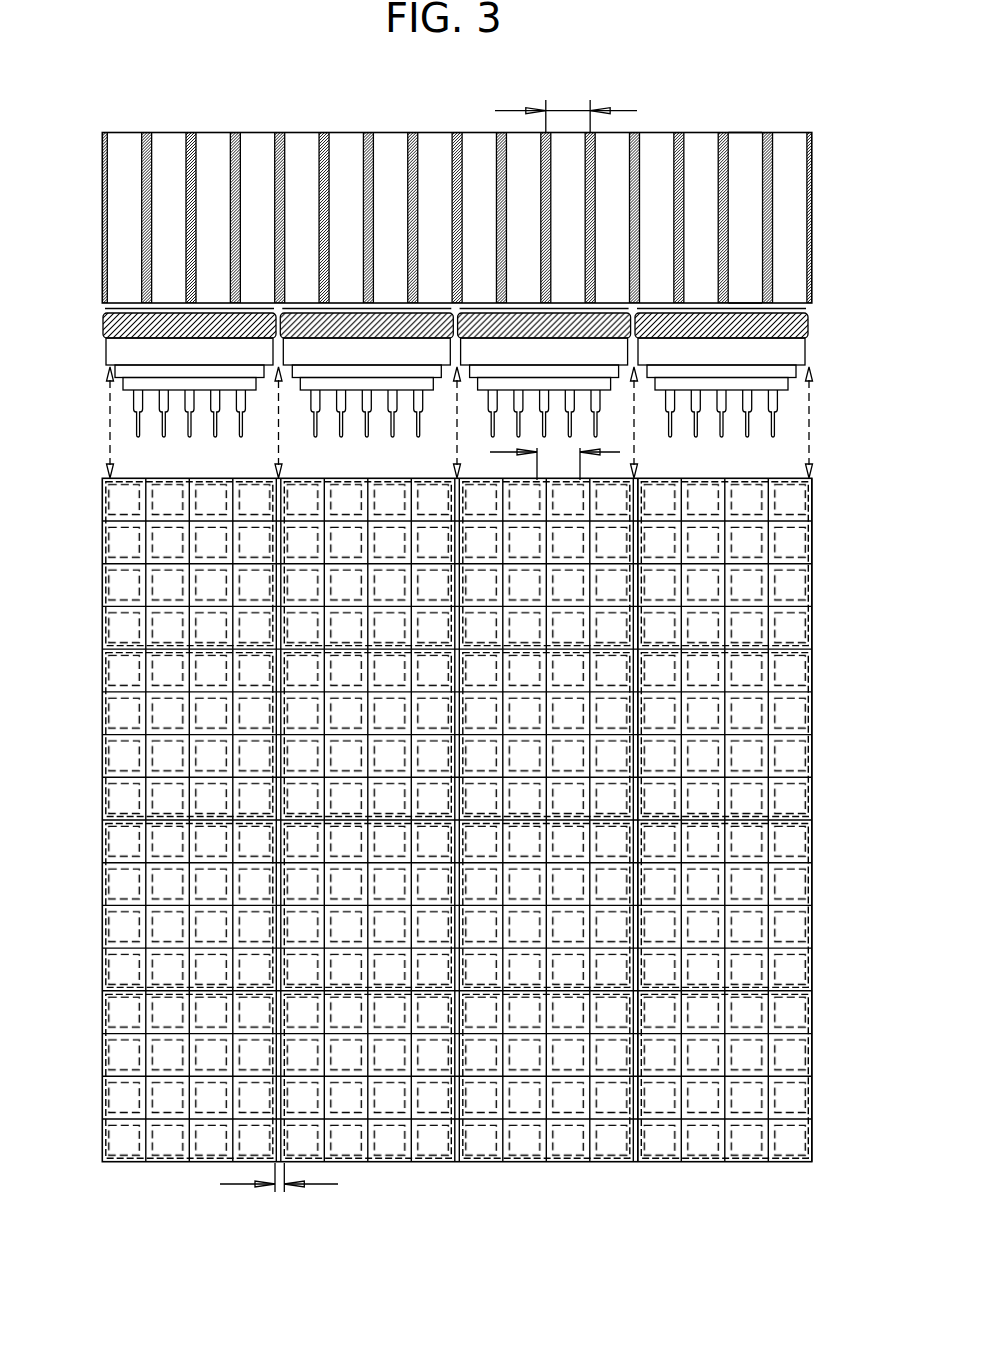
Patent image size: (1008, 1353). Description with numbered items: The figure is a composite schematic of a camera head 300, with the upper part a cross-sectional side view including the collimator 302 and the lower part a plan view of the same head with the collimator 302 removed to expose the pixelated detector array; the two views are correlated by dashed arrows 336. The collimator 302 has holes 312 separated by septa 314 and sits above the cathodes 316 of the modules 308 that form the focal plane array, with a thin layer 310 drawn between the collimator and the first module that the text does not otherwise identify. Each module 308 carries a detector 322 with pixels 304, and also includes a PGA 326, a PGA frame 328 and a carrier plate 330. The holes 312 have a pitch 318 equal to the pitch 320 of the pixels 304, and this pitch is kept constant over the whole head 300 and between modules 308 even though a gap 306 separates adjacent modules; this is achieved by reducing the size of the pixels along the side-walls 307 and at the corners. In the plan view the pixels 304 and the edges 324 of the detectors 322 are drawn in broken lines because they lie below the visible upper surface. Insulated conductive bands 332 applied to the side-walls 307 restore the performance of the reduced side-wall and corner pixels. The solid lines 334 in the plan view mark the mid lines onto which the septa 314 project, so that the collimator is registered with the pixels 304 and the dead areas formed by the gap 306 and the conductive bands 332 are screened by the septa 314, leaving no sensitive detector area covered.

The camera head 300 is at (766, 314).
The collimator 302 is at (813, 150).
The pixels 304 is at (123, 495).
The gap 306 is at (338, 1184).
The side-walls 307 is at (638, 490).
The modules 308 is at (151, 367).
The thermal interface layer 310 is at (164, 291).
The holes 312 is at (745, 138).
The septa 314 is at (640, 147).
The cathodes 316 is at (748, 279).
The pitch 318 is at (560, 110).
The pitch 320 is at (492, 453).
The detectors 322 is at (755, 375).
The edges 324 is at (803, 485).
The PGA 326 is at (161, 432).
The PGA frame 328 is at (22, 388).
The carrier plate 330 is at (155, 373).
The insulated conductive bands 332 is at (153, 334).
The solid lines 334 is at (813, 550).
The dashed arrows 336 is at (812, 435).